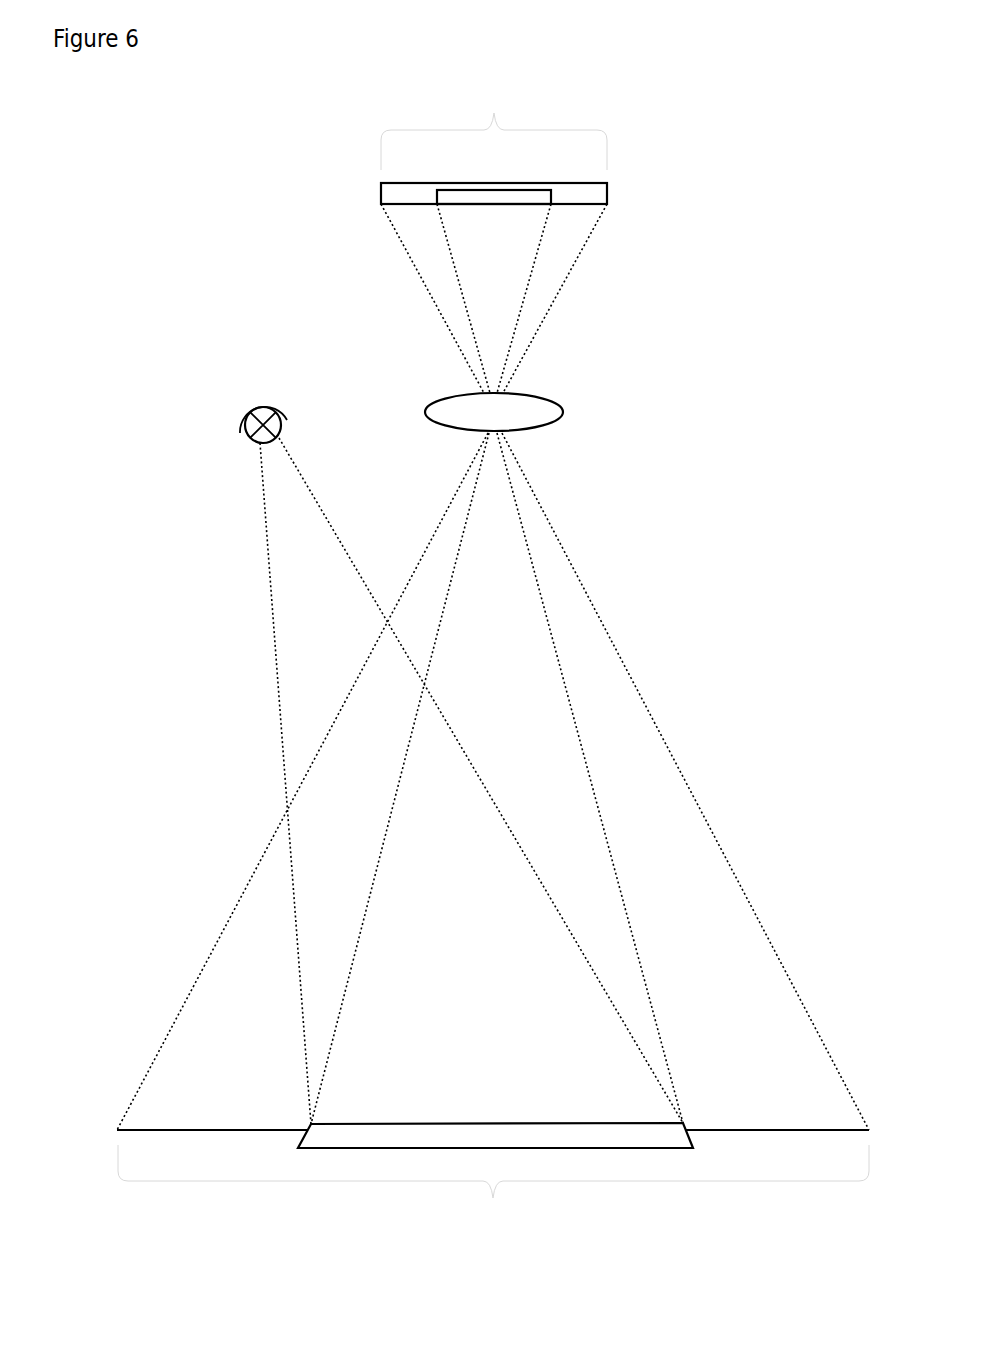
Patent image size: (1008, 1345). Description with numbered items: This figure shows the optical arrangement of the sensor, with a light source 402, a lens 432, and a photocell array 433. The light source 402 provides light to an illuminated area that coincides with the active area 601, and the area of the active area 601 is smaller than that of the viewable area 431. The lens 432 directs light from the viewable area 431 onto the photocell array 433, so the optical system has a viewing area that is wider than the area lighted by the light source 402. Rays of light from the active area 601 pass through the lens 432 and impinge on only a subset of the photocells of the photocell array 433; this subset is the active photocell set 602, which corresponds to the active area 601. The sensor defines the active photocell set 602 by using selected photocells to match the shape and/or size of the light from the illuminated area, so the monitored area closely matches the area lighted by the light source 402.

The photocell array 433 is at (494, 126).
The active photocell set 602 is at (437, 197).
The lens 432 is at (550, 391).
The light source 402 is at (249, 390).
The active area 601 is at (550, 1121).
The viewable area 431 is at (493, 1197).